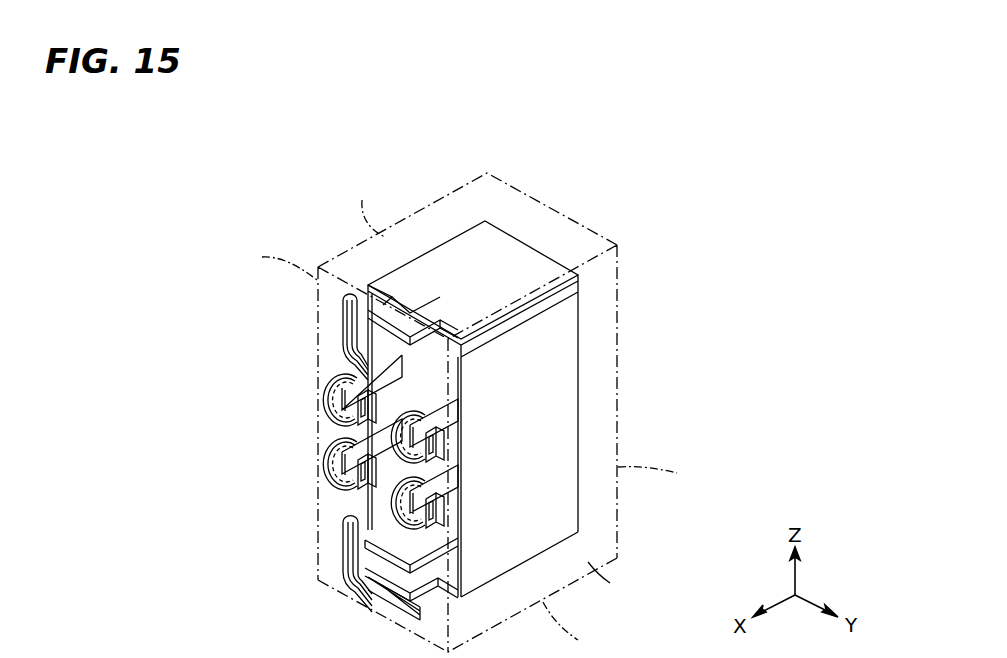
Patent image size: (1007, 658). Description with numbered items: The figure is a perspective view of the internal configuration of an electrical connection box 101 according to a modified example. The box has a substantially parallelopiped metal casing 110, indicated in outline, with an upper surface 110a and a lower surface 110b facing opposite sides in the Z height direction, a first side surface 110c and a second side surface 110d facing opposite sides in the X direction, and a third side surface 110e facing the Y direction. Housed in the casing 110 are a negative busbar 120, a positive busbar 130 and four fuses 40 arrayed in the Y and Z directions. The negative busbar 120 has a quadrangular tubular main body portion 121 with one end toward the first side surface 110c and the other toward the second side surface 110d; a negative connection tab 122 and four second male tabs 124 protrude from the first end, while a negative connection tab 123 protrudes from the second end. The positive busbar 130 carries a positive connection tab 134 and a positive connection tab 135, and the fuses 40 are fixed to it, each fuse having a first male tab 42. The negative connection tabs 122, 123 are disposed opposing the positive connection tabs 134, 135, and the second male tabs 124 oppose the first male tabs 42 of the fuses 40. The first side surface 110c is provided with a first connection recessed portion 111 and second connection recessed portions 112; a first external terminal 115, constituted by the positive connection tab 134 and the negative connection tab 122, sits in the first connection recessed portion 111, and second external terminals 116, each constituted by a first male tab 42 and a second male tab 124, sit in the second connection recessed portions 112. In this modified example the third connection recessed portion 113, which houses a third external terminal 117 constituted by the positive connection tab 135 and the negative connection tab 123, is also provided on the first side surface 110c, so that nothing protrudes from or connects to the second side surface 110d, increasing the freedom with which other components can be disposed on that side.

The electrical connection box 101 is at (320, 204).
The casing 110 is at (432, 202).
The upper surface 110a is at (367, 208).
The lower surface 110b is at (586, 628).
The first side surface 110c is at (263, 263).
The second side surface 110d is at (675, 473).
The third side surface 110e is at (625, 580).
The first connection recessed portion 111 is at (318, 582).
The second connection recessed portion 112 is at (330, 474).
The third connection recessed portion 113 is at (340, 310).
The first external terminal 115 is at (320, 613).
The second external terminal 116 is at (246, 460).
The third external terminal 117 is at (324, 291).
The negative busbar 120 is at (578, 347).
The main body portion 121 is at (487, 583).
The negative connection tab 122 is at (392, 588).
The negative connection tab 123 is at (408, 312).
The second male tab 124 is at (342, 393).
The positive busbar 130 is at (274, 361).
The positive connection tab 134 is at (357, 553).
The positive connection tab 135 is at (335, 340).
The fuse 40 is at (443, 394).
The first male tab 42 is at (352, 412).